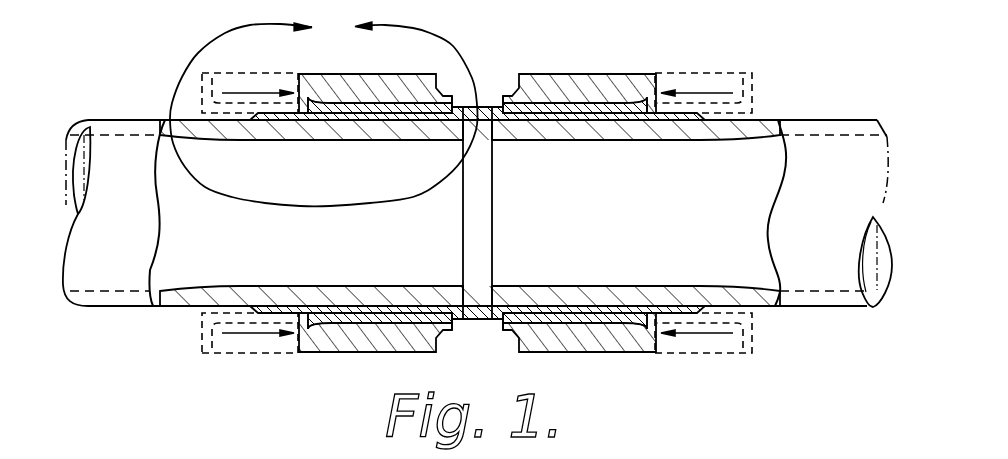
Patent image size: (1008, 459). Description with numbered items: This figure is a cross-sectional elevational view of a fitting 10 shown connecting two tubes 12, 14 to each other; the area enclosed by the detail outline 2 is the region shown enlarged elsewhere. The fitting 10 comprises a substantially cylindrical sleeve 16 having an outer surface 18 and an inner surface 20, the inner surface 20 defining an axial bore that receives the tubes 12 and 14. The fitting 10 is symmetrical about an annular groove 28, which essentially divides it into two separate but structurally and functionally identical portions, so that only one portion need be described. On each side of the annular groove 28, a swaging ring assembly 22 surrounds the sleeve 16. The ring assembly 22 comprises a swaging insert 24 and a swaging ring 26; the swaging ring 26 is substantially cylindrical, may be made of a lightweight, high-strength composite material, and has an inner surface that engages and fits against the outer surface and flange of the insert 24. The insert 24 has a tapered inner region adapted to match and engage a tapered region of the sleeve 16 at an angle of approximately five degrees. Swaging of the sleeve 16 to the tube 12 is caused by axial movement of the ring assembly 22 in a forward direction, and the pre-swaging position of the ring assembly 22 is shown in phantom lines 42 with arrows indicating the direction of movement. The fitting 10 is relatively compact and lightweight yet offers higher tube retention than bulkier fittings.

The detail area shown in FIG. 2 is at (324, 107).
The fitting 10 is at (513, 188).
The tube 12 is at (100, 118).
The tube 14 is at (840, 122).
The sleeve 16 is at (513, 113).
The outer surface 18 is at (255, 117).
The inner surface 20 is at (292, 122).
The swaging ring assembly 22 is at (729, 63).
The swaging insert 24 is at (310, 100).
The swaging ring 26 is at (398, 74).
The annular groove 28 is at (480, 108).
The phantom lines 42 is at (202, 95).